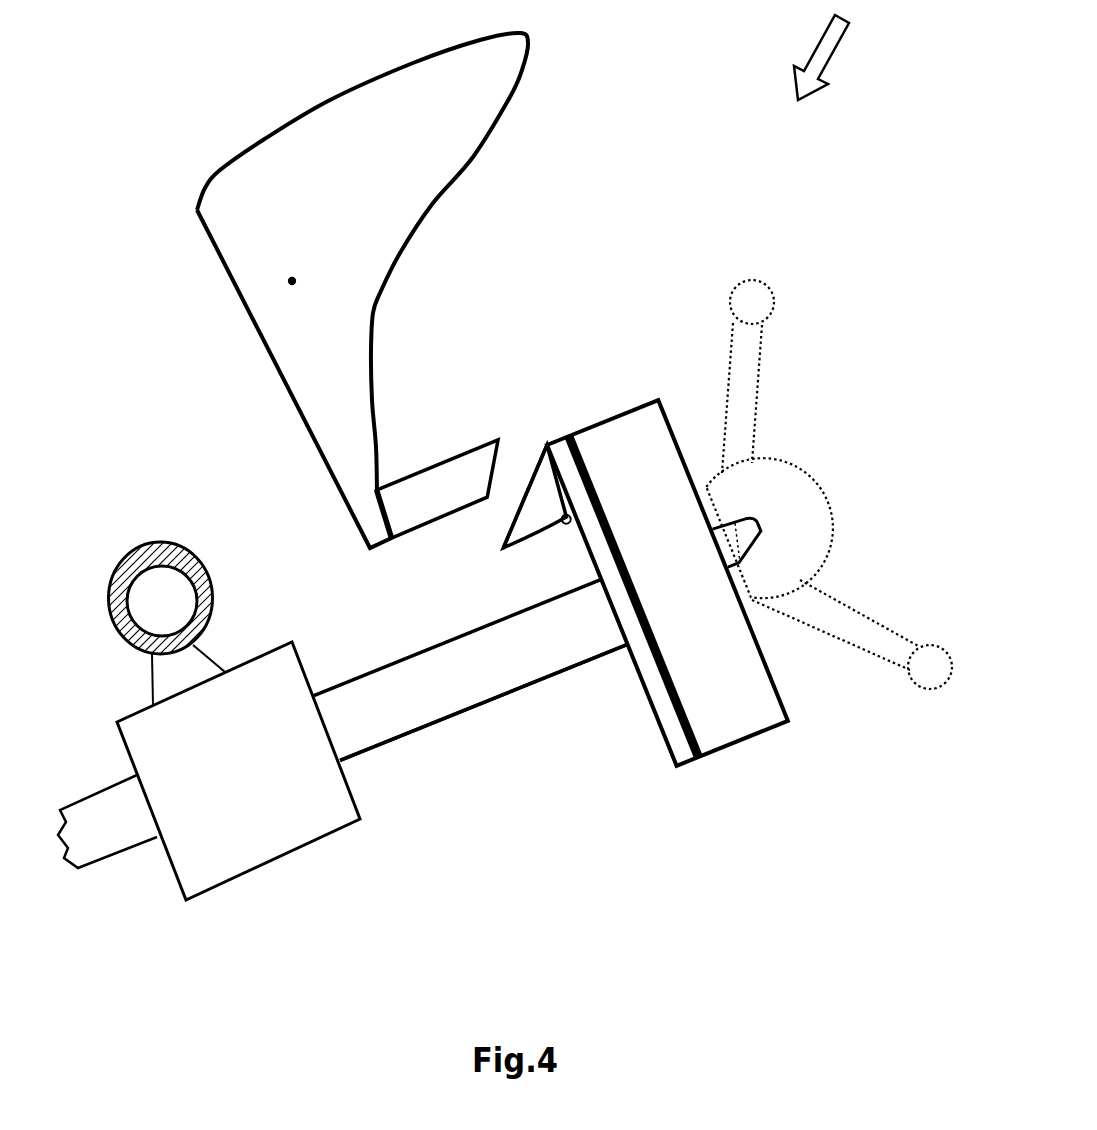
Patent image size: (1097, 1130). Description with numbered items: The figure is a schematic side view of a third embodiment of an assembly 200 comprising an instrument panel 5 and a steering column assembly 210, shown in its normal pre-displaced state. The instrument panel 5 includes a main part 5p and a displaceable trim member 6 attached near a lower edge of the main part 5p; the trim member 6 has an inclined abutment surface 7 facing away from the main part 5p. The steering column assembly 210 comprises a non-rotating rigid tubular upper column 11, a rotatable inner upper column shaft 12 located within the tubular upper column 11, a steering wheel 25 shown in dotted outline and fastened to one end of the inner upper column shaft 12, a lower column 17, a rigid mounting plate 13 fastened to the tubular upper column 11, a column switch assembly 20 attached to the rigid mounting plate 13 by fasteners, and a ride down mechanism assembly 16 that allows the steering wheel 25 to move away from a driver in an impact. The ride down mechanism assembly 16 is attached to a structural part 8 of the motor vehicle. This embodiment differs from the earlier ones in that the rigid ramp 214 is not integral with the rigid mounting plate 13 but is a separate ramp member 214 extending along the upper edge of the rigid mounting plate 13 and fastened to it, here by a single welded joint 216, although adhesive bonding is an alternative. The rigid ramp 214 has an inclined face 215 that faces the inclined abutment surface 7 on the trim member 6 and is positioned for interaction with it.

The instrument panel 5 is at (313, 108).
The main part 5p is at (292, 281).
The trim member 6 is at (428, 465).
The inclined abutment surface 7 is at (492, 404).
The structural part 8 is at (163, 593).
The tubular upper column 11 is at (560, 673).
The inner upper column shaft 12 is at (766, 529).
The rigid mounting plate 13 is at (659, 732).
The ride down mechanism assembly 16 is at (281, 861).
The lower column 17 is at (115, 857).
The column switch assembly 20 is at (720, 747).
The steering wheel 25 is at (779, 305).
The assembly 200 is at (843, 50).
The steering column assembly 210 is at (486, 708).
The rigid ramp 214 is at (487, 529).
The inclined face 215 is at (534, 444).
The welded joint 216 is at (567, 525).